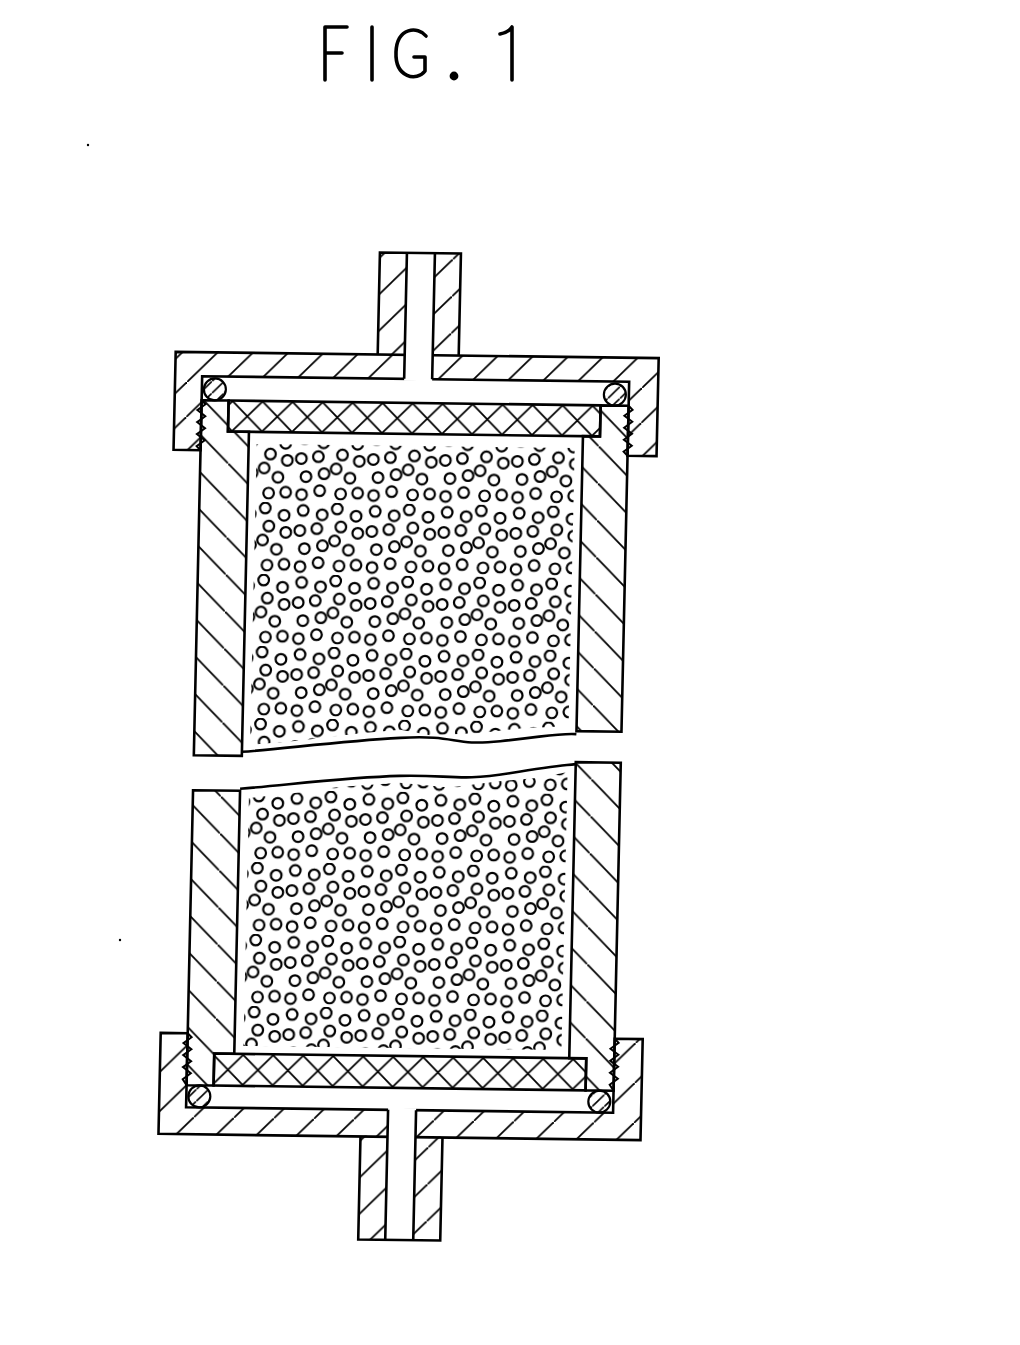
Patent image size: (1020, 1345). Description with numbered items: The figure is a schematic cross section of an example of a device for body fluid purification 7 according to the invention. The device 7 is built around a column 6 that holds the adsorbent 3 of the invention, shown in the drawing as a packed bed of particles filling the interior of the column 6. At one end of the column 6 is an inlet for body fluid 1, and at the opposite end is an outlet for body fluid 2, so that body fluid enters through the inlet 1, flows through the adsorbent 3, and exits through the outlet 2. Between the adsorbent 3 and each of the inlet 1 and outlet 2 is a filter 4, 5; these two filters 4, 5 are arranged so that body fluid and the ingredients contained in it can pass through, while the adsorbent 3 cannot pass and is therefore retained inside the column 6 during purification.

The inlet for body fluid 1 is at (408, 1203).
The outlet for body fluid 2 is at (425, 316).
The adsorbent 3 is at (557, 493).
The filter 4 is at (575, 1084).
The filter 5 is at (607, 429).
The column 6 is at (605, 660).
The device for body fluid purification 7 is at (160, 624).